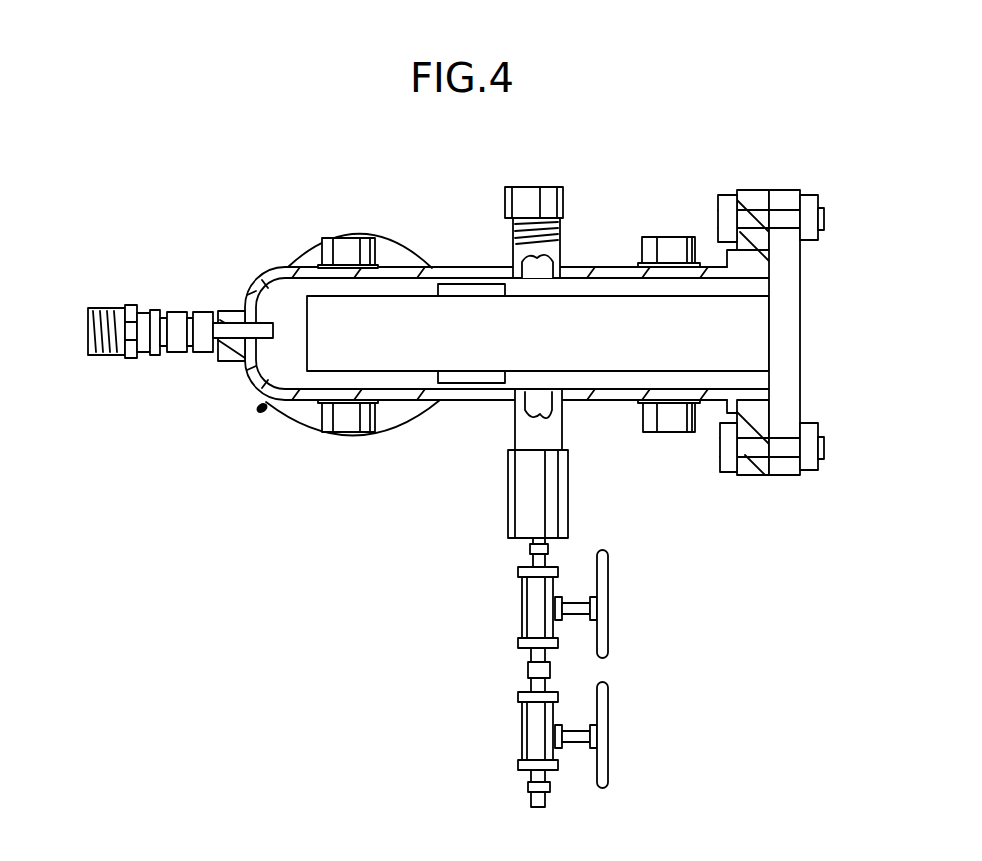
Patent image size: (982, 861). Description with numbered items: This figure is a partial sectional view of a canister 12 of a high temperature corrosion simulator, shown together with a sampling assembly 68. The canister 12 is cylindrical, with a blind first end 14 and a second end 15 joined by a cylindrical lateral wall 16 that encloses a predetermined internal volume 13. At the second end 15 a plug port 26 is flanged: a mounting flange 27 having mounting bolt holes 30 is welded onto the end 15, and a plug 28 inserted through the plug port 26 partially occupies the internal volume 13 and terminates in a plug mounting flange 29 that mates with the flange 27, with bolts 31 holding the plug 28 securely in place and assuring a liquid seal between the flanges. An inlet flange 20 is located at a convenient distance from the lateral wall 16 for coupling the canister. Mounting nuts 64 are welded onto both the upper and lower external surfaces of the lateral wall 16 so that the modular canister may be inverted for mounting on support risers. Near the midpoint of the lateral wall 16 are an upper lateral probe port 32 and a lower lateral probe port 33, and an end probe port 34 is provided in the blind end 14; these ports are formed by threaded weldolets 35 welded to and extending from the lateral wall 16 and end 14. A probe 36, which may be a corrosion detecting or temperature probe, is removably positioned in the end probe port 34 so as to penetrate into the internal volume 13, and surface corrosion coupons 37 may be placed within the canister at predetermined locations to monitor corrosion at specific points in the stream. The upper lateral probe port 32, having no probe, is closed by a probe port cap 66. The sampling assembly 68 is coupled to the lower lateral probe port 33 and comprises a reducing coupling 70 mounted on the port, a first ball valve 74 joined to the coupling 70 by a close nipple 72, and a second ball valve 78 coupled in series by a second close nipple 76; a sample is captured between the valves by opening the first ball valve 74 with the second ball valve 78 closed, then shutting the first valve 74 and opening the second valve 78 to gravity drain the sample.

The canister 12 is at (262, 408).
The internal volume 13 is at (307, 382).
The first end 14 is at (253, 284).
The second end 15 is at (765, 397).
The cylindrical lateral wall 16 is at (593, 268).
The inlet flange 20 is at (308, 252).
The plug port 26 is at (770, 282).
The mounting flange 27 is at (762, 212).
The plug 28 is at (758, 338).
The plug mounting flange 29 is at (784, 460).
The mounting bolt holes 30 is at (760, 216).
The bolts 31 is at (821, 219).
The upper lateral probe port 32 is at (527, 268).
The lower lateral probe port 33 is at (533, 405).
The end probe port 34 is at (233, 353).
The threaded weldolets 35 is at (523, 247).
The probe 36 is at (126, 356).
The surface corrosion coupons 37 is at (457, 378).
The mounting nuts 64 is at (355, 243).
The probe port cap 66 is at (548, 196).
The sampling assembly 68 is at (472, 706).
The reducing coupling 70 is at (552, 520).
The close nipple 72 is at (552, 548).
The ball valve 74 is at (542, 610).
The second close nipple 76 is at (550, 668).
The second ball valve 78 is at (543, 733).